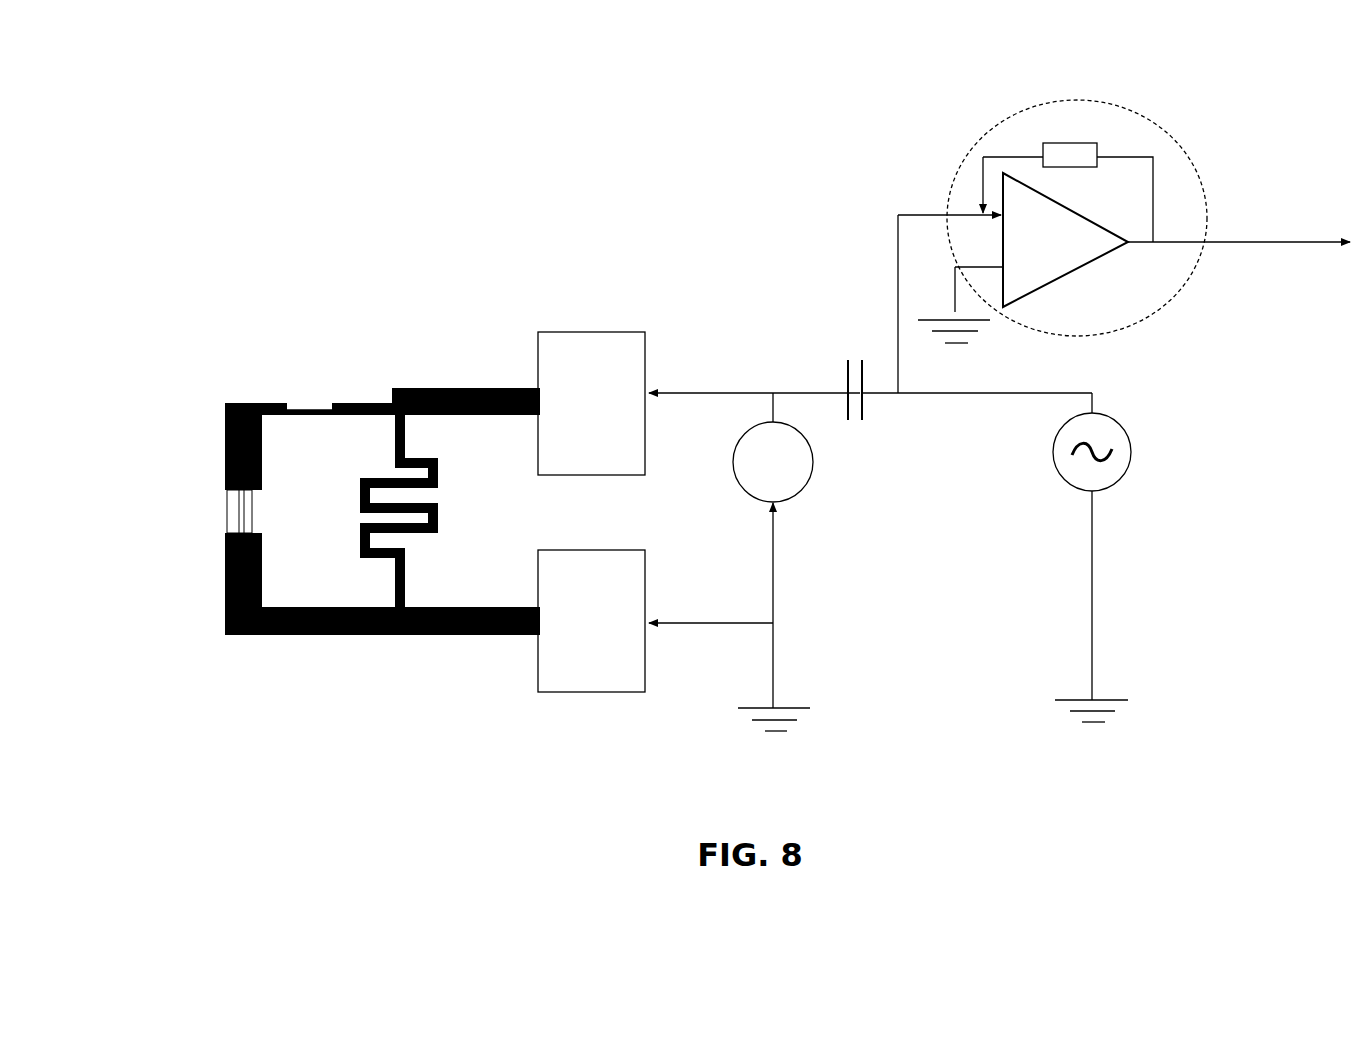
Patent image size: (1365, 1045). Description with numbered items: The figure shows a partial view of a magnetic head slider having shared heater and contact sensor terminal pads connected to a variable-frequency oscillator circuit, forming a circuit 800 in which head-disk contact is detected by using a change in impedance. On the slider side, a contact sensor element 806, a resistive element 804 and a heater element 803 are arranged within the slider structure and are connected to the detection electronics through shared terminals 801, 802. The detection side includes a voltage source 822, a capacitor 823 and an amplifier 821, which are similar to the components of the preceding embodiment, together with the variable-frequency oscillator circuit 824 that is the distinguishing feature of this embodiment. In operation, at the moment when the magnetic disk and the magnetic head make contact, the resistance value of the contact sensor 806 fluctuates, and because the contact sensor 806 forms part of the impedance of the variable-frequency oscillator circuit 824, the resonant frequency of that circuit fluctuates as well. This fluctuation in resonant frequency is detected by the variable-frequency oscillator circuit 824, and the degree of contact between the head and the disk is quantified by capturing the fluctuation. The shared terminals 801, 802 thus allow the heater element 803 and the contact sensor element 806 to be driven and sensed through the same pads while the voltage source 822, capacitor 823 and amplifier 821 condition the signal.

The circuit 800 is at (412, 198).
The shared terminal 801 is at (591, 403).
The shared terminal 802 is at (591, 621).
The heater element 803 is at (452, 504).
The resistive element 804 is at (303, 396).
The contact sensor element 806 is at (204, 522).
The amplifier 821 is at (1186, 200).
The voltage source 822 is at (736, 420).
The capacitor 823 is at (855, 338).
The variable-frequency oscillator circuit 824 is at (1142, 446).